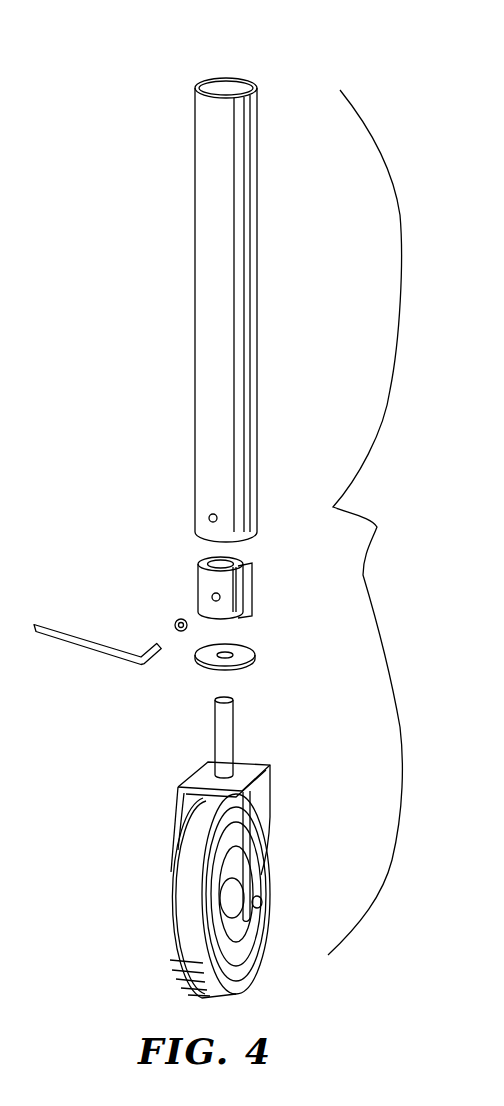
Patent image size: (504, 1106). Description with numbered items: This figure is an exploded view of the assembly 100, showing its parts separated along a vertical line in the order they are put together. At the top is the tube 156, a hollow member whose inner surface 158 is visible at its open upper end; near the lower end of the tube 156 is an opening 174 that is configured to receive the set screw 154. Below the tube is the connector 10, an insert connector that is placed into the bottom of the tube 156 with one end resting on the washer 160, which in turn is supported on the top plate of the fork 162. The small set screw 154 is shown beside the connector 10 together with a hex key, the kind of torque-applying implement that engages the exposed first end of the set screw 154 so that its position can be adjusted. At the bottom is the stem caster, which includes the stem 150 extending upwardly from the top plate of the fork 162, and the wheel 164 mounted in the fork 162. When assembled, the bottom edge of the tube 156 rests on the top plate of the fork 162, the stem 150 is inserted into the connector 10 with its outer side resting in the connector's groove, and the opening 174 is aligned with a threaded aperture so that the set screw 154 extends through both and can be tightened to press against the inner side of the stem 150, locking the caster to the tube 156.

The assembly 100 is at (380, 522).
The tube 156 is at (233, 318).
The inner surface 158 is at (225, 91).
The opening 174 is at (215, 521).
The connector 10 is at (245, 565).
The set screw 154 is at (176, 621).
The washer 160 is at (250, 651).
The stem 150 is at (228, 735).
The fork 162 is at (260, 803).
The wheel 164 is at (183, 897).